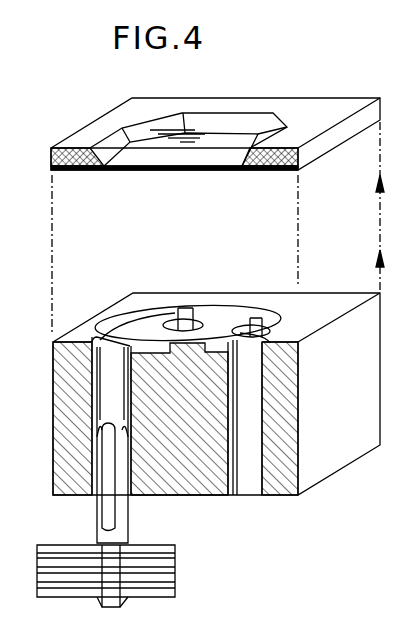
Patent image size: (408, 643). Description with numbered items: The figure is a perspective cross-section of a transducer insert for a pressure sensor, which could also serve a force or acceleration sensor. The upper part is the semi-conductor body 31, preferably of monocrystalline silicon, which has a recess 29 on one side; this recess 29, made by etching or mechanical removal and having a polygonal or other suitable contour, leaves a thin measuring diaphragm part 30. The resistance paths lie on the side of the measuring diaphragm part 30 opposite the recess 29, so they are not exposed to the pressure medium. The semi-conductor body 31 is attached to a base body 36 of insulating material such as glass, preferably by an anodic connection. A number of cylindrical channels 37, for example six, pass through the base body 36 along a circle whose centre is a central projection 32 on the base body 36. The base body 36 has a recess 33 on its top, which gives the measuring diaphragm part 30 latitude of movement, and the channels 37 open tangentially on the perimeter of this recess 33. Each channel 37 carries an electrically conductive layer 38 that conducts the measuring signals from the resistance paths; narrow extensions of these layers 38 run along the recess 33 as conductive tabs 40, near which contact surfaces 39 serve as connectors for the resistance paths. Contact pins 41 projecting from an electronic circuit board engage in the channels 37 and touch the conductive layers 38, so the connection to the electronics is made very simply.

The recess 29 is at (239, 142).
The measuring diaphragm part 30 is at (185, 171).
The semi-conductor body 31 is at (98, 125).
The central projection 32 is at (170, 341).
The recess 33 is at (217, 333).
The base body 36 is at (338, 449).
The cylindrical channels 37 is at (87, 392).
The electrically conductive layer 38 is at (247, 330).
The contact surfaces 39 is at (102, 172).
The conductive tabs 40 is at (93, 338).
The contact pins 41 is at (98, 527).